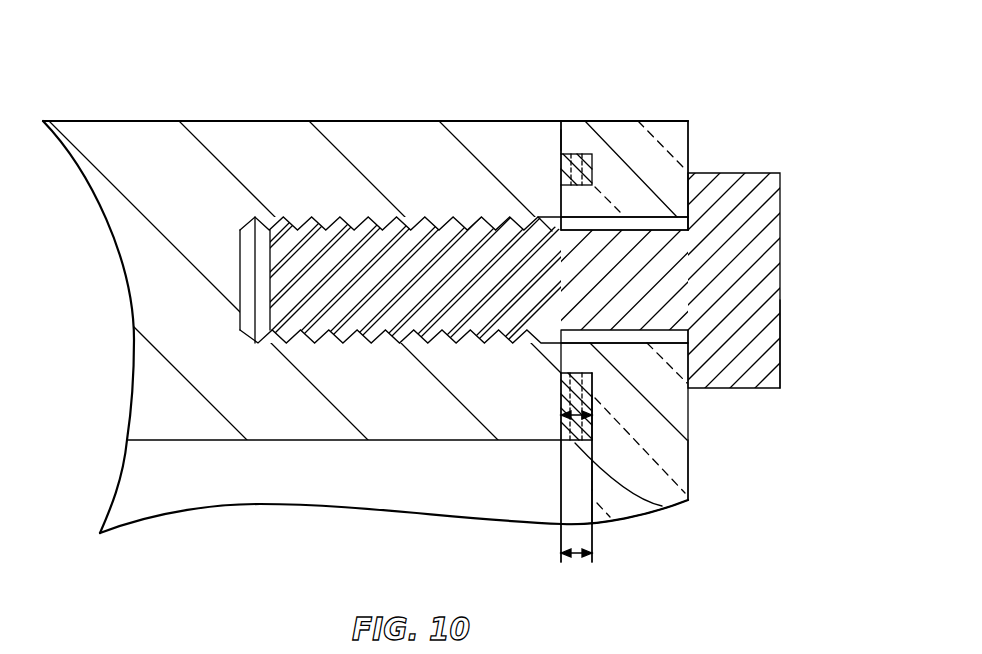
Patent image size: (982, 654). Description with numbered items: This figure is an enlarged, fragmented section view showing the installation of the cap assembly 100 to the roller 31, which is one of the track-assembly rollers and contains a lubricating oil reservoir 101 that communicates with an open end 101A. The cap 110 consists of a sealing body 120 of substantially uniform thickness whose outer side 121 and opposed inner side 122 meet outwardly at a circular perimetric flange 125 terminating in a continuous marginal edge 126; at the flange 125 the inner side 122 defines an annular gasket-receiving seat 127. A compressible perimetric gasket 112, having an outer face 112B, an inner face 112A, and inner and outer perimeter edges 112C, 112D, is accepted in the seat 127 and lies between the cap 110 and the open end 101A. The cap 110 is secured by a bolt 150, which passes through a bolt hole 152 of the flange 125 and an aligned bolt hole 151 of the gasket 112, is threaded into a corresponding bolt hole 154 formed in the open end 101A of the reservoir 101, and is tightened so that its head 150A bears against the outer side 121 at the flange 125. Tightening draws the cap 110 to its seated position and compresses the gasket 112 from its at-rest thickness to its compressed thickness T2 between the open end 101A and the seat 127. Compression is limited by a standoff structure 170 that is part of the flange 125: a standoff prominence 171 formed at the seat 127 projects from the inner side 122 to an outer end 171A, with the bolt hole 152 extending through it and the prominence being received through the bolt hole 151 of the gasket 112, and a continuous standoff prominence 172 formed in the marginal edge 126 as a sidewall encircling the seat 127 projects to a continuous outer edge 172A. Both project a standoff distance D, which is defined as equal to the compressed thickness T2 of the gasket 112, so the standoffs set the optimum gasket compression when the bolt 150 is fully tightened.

The cap assembly 100 is at (667, 34).
The roller 31 is at (385, 121).
The lubricating oil reservoir 101 is at (194, 484).
The open end 101A is at (584, 127).
The cap 110 is at (689, 497).
The gasket 112 is at (561, 408).
The inner face of gasket 112A is at (561, 387).
The outer face of gasket 112B is at (592, 410).
The inner perimeter edge of gasket 112C is at (670, 516).
The outer perimeter edge of gasket 112D is at (566, 155).
The sealing body 120 is at (637, 512).
The outer side of sealing body 121 is at (690, 137).
The inner side of sealing body 122 is at (592, 497).
The perimetric flange 125 is at (683, 468).
The marginal edge 126 is at (675, 121).
The gasket-receiving seat 127 is at (592, 476).
The bolt 150 is at (781, 200).
The bolt head 150A is at (781, 322).
The bolt hole of gasket 151 is at (567, 284).
The bolt hole of flange 152 is at (634, 283).
The bolt hole of open end 154 is at (297, 284).
The standoff structure 170 is at (574, 120).
The standoff prominence 171 is at (577, 202).
The outer end of standoff prominence 171A is at (561, 205).
The continuous standoff prominence 172 is at (561, 126).
The continuous outer edge 172A is at (561, 138).
The compressed thickness of gasket T2 is at (563, 432).
The standoff distance D is at (567, 558).